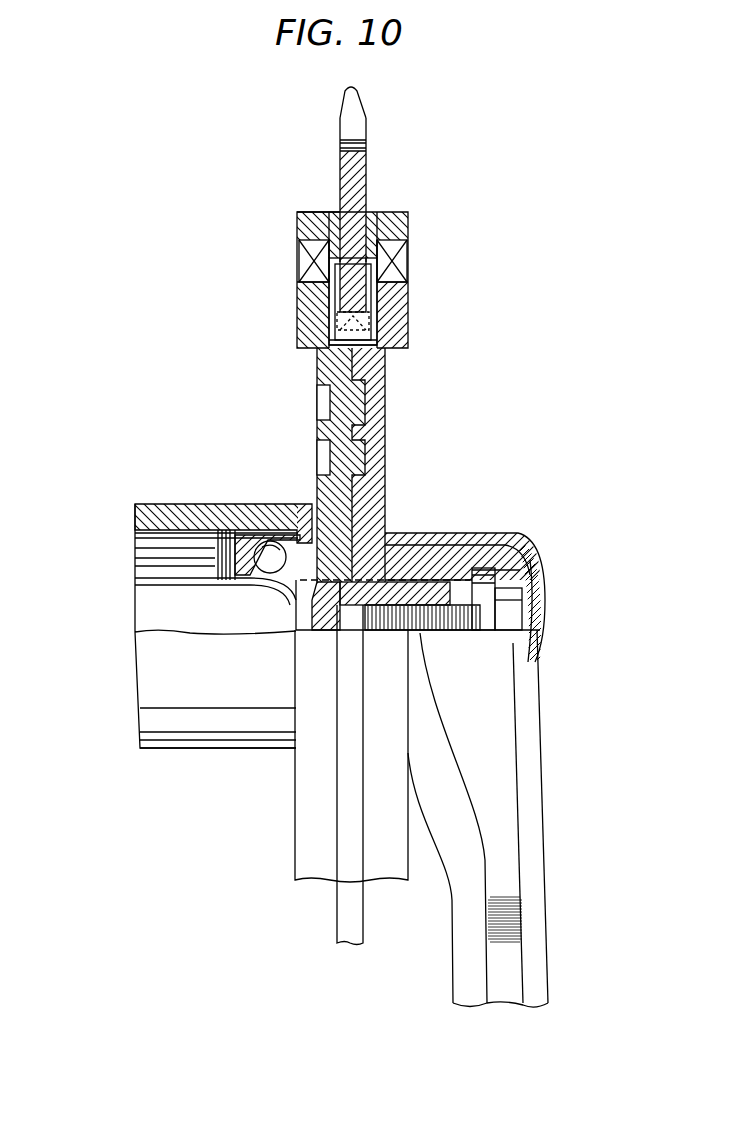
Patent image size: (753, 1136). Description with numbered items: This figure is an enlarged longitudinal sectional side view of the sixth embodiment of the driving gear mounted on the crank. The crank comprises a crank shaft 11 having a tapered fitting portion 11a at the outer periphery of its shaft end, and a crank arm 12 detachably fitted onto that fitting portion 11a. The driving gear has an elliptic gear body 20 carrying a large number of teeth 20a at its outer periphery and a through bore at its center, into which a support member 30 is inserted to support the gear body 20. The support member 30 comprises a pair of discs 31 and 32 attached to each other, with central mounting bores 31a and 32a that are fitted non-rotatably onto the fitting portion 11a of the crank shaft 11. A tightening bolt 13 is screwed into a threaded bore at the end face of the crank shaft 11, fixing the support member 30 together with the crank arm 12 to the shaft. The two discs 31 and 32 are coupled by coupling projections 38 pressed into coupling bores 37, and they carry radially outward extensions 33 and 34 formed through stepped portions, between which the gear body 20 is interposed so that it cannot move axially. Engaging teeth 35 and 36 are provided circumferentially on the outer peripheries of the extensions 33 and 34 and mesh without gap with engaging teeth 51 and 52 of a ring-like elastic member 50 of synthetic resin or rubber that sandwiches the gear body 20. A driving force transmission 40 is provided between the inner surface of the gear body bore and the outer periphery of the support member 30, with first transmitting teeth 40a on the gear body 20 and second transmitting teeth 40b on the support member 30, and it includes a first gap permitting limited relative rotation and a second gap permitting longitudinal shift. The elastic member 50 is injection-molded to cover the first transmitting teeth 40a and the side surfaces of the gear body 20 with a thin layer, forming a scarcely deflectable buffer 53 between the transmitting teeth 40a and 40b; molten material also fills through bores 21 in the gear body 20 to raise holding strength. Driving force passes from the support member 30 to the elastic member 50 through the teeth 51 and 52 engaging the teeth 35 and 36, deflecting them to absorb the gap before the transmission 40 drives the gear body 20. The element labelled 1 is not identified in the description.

The shaft 1 is at (295, 623).
The crank shaft 11 is at (165, 580).
The fitting portion 11a is at (435, 580).
The crank arm 12 is at (540, 812).
The tightening bolt 13 is at (515, 613).
The gear body 20 is at (366, 163).
The teeth 20a is at (363, 111).
The through bores 21 is at (297, 218).
The support member 30 is at (393, 433).
The disc 31 is at (322, 487).
The mounting bore 31a is at (327, 613).
The disc 32 is at (380, 467).
The mounting bore 32a is at (363, 633).
The extension 33 is at (298, 294).
The extension 34 is at (405, 296).
The engaging teeth 35 is at (317, 277).
The engaging teeth 36 is at (405, 275).
The coupling bores 37 is at (362, 398).
The coupling projections 38 is at (358, 412).
The driving force transmission 40 is at (375, 325).
The first transmitting teeth 40a is at (337, 325).
The second transmitting teeth 40b is at (298, 340).
The elastic member 50 is at (417, 223).
The engaging teeth 51 is at (300, 252).
The engaging teeth 52 is at (405, 256).
The buffer 53 is at (372, 350).